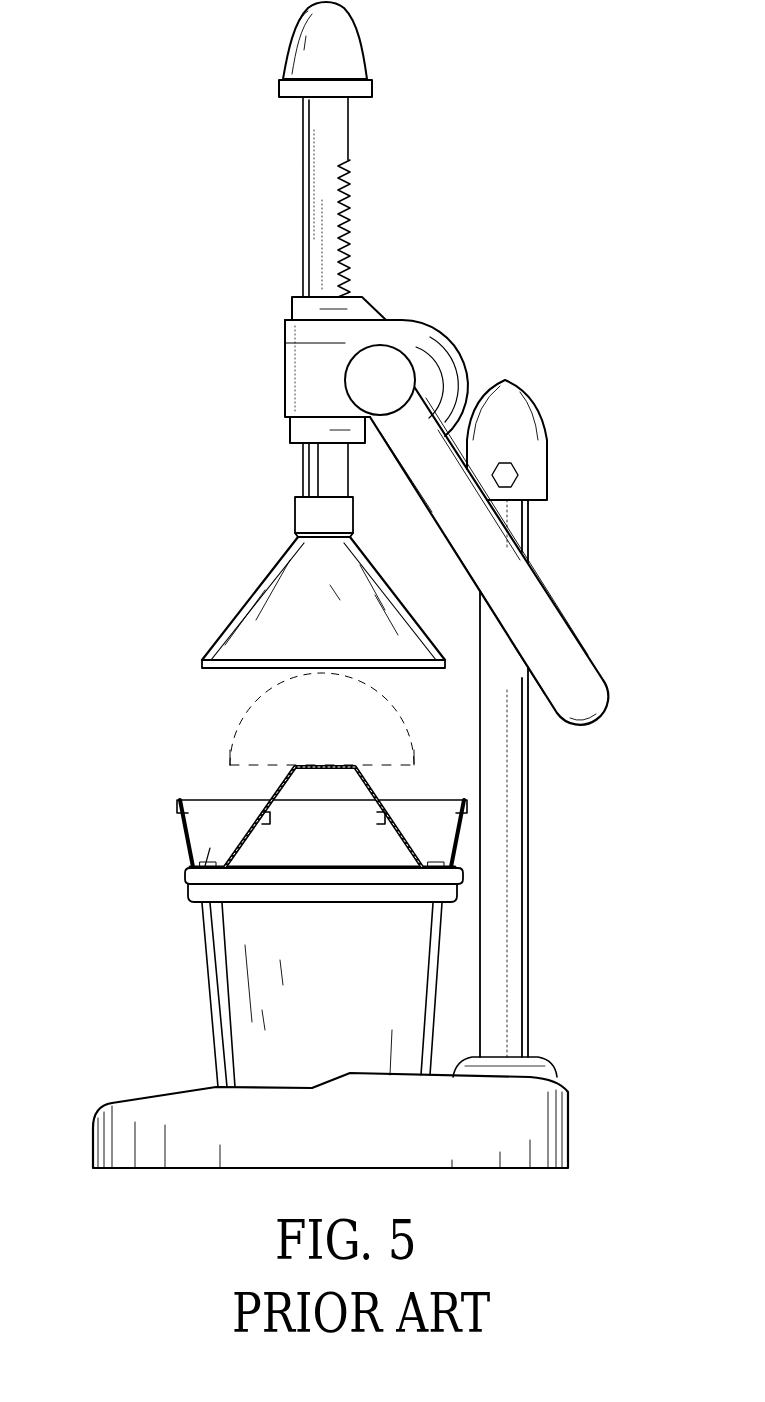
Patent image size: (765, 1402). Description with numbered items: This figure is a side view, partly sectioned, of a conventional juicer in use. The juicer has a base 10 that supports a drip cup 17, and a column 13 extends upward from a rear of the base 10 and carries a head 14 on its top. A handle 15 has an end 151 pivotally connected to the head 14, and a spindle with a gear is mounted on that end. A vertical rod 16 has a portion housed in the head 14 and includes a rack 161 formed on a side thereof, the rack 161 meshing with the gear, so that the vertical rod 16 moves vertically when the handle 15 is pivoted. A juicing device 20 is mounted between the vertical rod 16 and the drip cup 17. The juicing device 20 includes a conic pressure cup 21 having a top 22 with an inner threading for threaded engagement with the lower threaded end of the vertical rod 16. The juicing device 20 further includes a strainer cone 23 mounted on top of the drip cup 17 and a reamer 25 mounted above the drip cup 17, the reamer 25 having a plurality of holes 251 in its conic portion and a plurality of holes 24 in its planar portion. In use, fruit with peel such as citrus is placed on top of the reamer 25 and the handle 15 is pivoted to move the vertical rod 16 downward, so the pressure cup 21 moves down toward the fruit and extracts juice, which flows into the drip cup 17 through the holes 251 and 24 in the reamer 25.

The base 10 is at (475, 1158).
The column 13 is at (513, 867).
The head 14 is at (462, 362).
The handle 15 is at (553, 633).
The end of handle 151 is at (383, 380).
The vertical rod 16 is at (320, 182).
The rack 161 is at (347, 213).
The drip cup 17 is at (226, 995).
The juicing device 20 is at (181, 738).
The conic pressure cup 21 is at (246, 608).
The top of pressure cup 22 is at (308, 518).
The strainer cone 23 is at (186, 843).
The holes in planar portion 24 is at (210, 848).
The reamer 25 is at (280, 782).
The holes in conic portion 251 is at (268, 823).